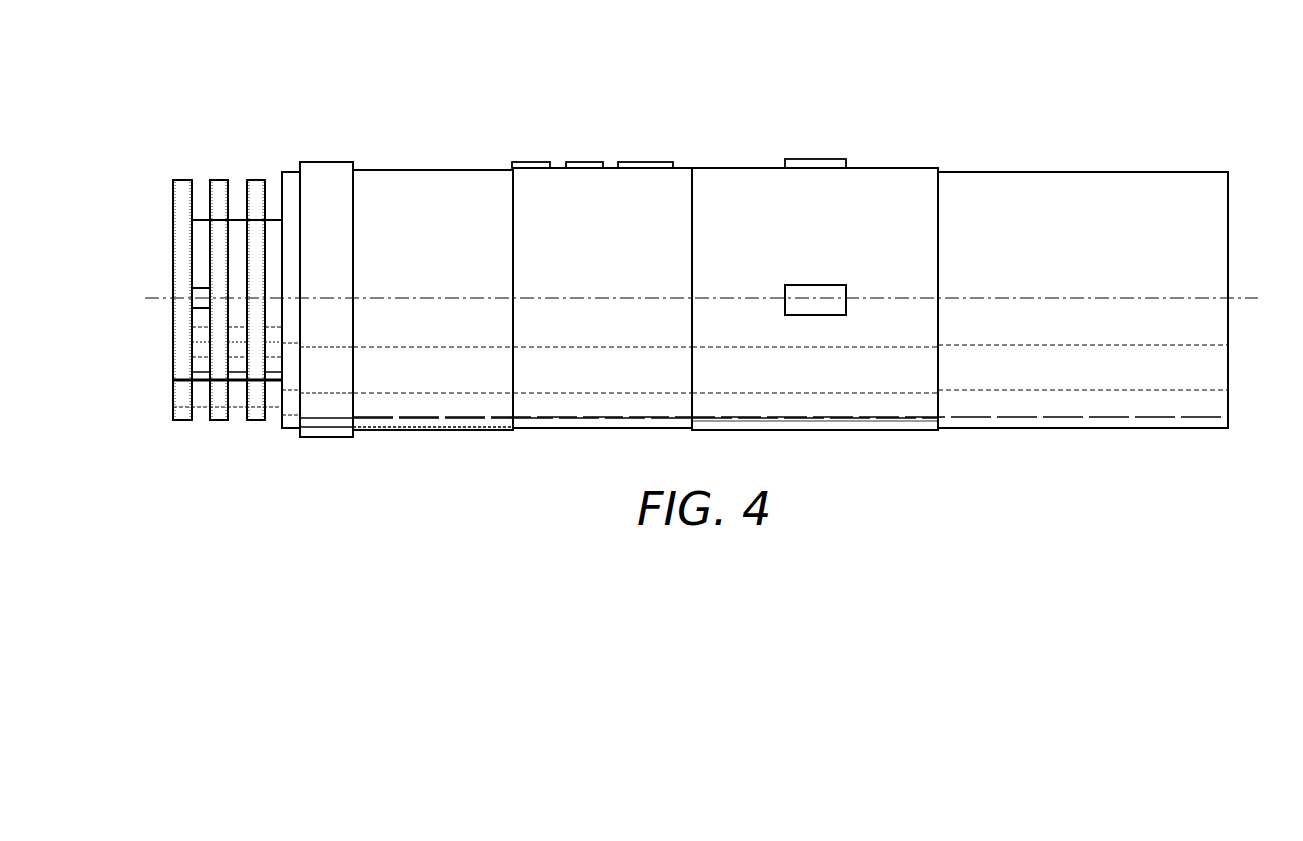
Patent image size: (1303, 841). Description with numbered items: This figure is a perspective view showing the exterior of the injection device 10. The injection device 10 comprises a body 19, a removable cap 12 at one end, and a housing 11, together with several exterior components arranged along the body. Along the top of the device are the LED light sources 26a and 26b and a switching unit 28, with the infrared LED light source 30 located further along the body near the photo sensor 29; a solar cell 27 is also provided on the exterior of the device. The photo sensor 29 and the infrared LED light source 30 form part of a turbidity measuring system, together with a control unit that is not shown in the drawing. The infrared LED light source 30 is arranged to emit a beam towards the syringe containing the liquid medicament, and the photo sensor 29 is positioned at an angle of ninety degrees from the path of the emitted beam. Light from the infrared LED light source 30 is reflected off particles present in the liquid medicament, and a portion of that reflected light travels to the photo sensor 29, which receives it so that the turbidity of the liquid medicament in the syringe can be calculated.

The injection device 10 is at (931, 96).
The housing 11 is at (1177, 405).
The removable cap 12 is at (238, 365).
The body 19 is at (1022, 189).
The LED light source 26a is at (584, 162).
The LED light source 26b is at (644, 162).
The solar cell 27 is at (881, 405).
The switching unit 28 is at (532, 162).
The photo sensor 29 is at (814, 290).
The infrared LED light source 30 is at (813, 159).